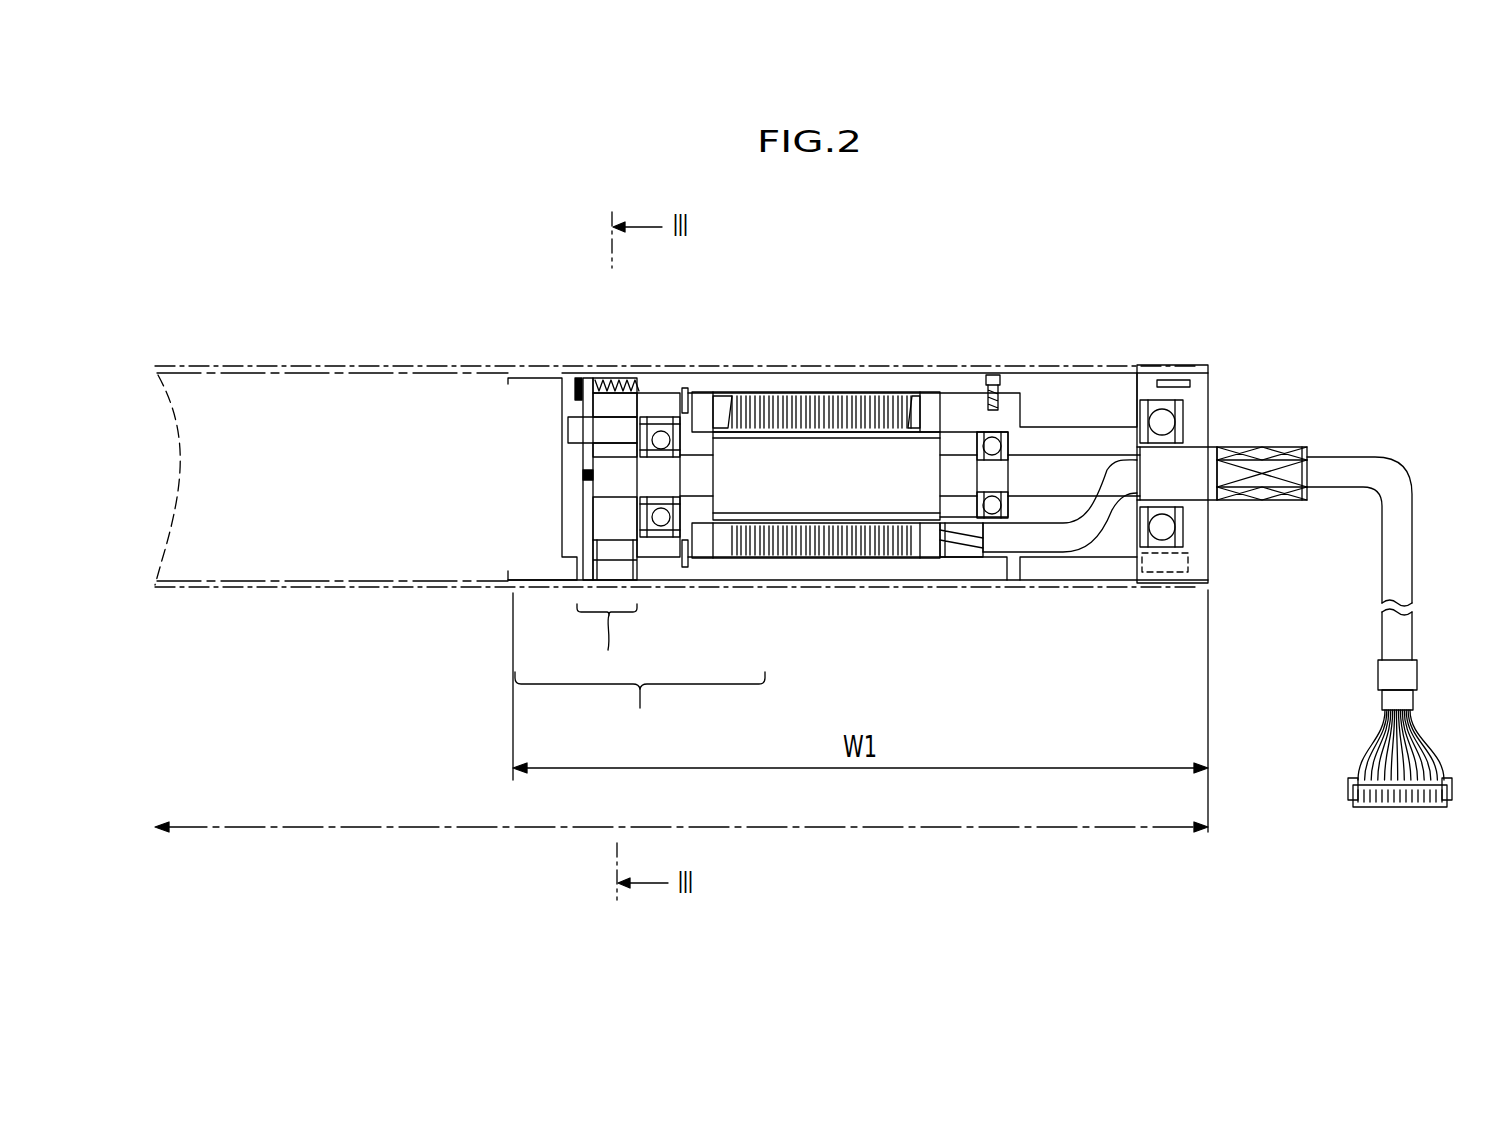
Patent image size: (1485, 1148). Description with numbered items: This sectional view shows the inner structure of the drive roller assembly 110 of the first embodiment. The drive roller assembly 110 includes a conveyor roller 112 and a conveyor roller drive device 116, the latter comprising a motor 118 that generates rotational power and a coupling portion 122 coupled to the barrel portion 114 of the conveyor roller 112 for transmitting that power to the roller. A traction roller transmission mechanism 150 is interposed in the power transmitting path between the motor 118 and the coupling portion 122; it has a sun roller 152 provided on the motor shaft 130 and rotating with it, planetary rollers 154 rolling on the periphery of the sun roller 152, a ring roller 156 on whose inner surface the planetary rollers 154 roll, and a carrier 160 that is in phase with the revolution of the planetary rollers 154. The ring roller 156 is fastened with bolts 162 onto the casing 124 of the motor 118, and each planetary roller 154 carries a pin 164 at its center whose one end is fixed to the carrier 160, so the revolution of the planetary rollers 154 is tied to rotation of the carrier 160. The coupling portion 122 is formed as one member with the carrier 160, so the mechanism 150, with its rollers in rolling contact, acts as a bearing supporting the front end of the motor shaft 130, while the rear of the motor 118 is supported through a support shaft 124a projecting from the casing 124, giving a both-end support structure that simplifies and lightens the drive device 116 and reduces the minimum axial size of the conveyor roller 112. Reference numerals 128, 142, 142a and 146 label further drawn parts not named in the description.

The drive roller assembly 110 is at (1043, 254).
The conveyor roller 112 is at (437, 308).
The barrel portion 114 is at (282, 370).
The conveyor roller drive device 116 is at (640, 708).
The motor 118 is at (740, 568).
The coupling portion 122 is at (535, 590).
The casing 124 is at (947, 371).
The support shaft 124a is at (1283, 447).
The bearing 128 is at (663, 440).
The motor shaft 130 is at (887, 488).
The end cap 142 is at (1195, 366).
The coupling boss 142a is at (1207, 447).
The end bearing 146 is at (1162, 420).
The traction roller transmission mechanism 150 is at (607, 645).
The sun roller 152 is at (605, 493).
The planetary roller 154 is at (632, 398).
The ring roller 156 is at (612, 583).
The carrier 160 is at (580, 461).
The bolt 162 is at (613, 448).
The pin 164 is at (577, 432).